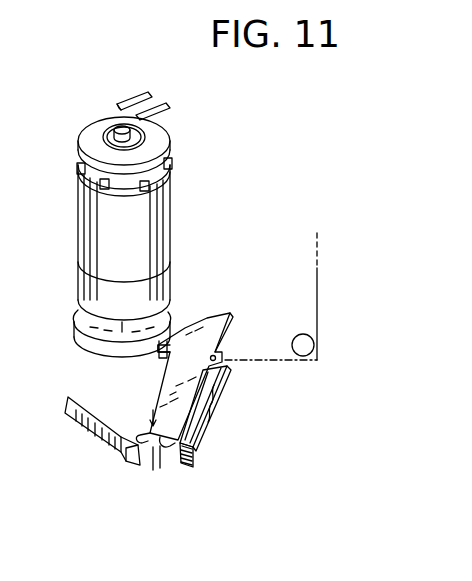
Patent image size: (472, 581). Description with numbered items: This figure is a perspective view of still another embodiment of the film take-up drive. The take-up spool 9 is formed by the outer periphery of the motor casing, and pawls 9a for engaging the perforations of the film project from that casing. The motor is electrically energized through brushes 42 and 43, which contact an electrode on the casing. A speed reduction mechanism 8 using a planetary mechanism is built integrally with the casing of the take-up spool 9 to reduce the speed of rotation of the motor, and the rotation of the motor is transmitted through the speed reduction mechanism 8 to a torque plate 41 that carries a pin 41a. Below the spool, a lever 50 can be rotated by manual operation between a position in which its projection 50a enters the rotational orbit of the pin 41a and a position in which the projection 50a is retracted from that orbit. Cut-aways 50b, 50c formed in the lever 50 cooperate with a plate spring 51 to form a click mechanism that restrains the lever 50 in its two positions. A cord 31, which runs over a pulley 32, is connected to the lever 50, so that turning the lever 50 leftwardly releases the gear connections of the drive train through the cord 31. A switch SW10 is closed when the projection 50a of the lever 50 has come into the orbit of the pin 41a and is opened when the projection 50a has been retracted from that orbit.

The take-up spool 9 is at (157, 213).
The pawls 9a is at (171, 165).
The speed reduction mechanism 8 is at (160, 282).
The brush 42 is at (139, 101).
The brush 43 is at (163, 111).
The torque plate 41 is at (80, 322).
The pin 41a is at (160, 350).
The lever 50 is at (222, 316).
The projection 50a is at (176, 346).
The cut-away 50b is at (140, 433).
The cut-away 50c is at (163, 447).
The plate spring 51 is at (108, 447).
The switch SW10 is at (212, 408).
The cord 31 is at (318, 272).
The pulley 32 is at (305, 345).